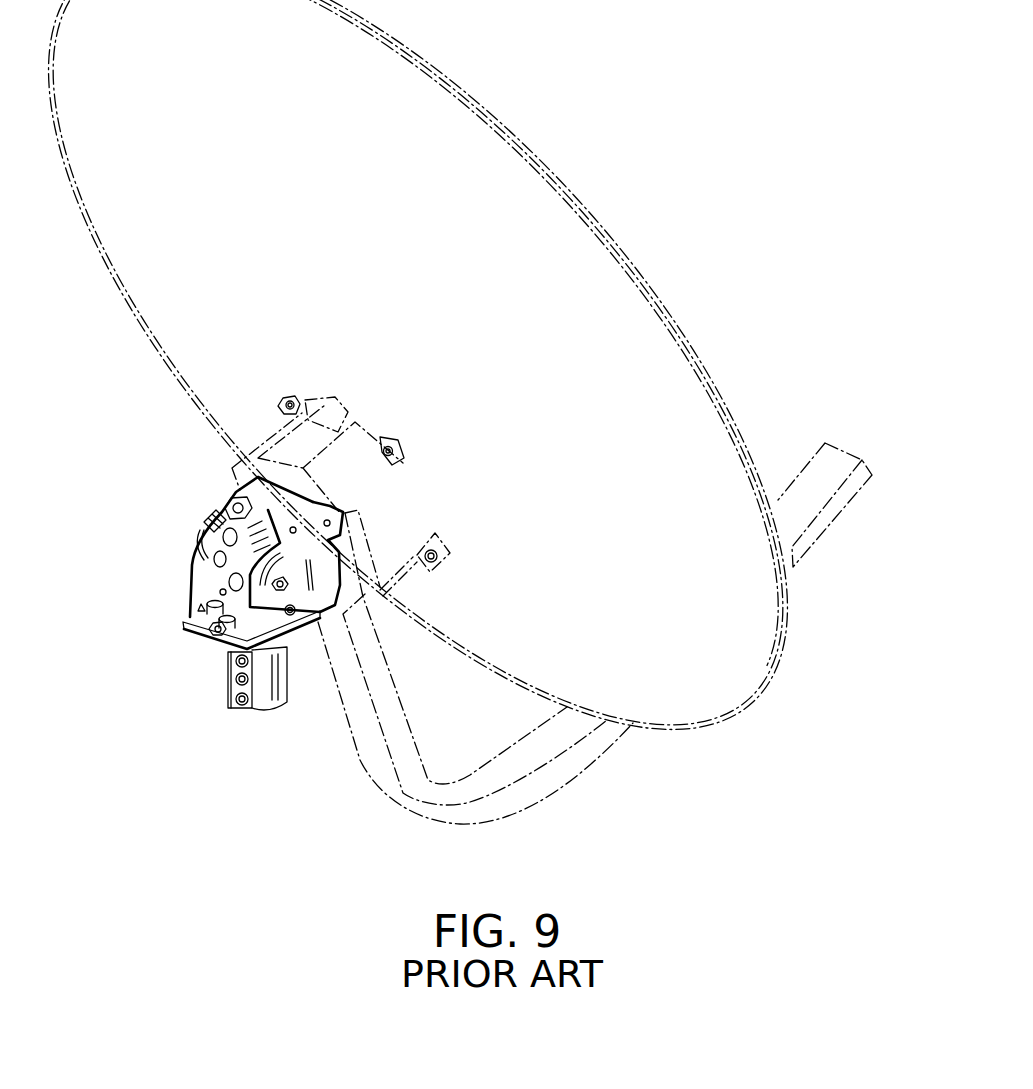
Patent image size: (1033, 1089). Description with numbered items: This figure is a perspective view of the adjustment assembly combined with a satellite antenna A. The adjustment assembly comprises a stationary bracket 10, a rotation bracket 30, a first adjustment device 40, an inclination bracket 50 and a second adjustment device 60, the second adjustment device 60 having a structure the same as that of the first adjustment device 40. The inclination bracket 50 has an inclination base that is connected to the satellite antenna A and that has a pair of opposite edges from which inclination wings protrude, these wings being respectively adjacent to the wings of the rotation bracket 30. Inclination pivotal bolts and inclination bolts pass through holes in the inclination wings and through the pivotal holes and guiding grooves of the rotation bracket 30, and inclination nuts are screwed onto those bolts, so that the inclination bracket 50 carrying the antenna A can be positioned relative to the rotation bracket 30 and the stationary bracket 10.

The satellite antenna A is at (552, 160).
The stationary bracket 10 is at (218, 722).
The rotation bracket 30 is at (188, 549).
The first adjustment device 40 is at (199, 604).
The inclination bracket 50 is at (325, 545).
The second adjustment device 60 is at (214, 511).